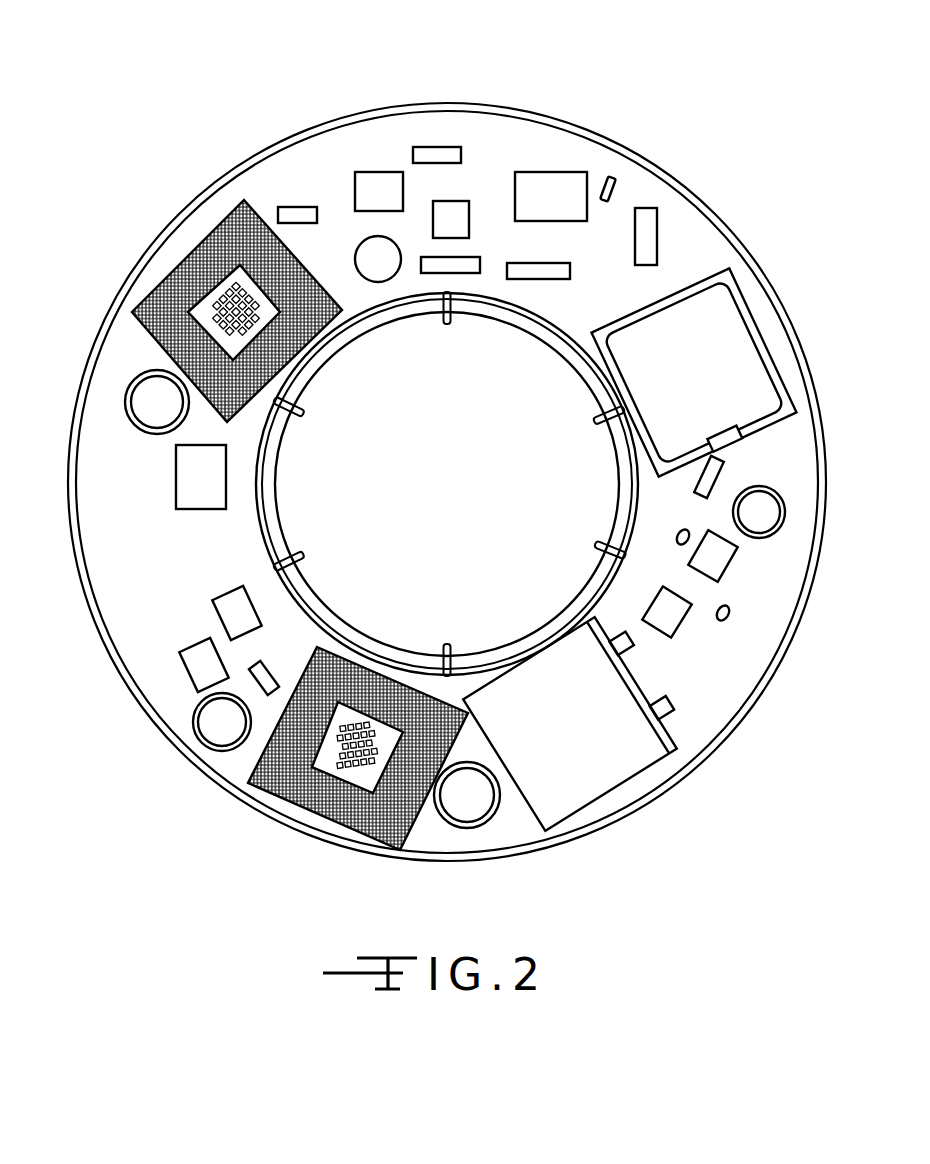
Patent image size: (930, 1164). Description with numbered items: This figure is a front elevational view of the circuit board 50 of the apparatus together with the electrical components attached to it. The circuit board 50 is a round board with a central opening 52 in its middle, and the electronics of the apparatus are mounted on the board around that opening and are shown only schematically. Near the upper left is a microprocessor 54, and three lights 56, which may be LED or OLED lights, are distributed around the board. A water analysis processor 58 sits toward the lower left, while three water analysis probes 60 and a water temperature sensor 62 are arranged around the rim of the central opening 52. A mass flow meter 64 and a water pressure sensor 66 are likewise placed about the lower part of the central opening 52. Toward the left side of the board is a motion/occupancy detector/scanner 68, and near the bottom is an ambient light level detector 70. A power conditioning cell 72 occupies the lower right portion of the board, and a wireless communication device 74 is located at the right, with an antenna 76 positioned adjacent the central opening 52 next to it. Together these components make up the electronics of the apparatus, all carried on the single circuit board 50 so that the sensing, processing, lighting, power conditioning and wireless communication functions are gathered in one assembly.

The circuit board 50 is at (229, 124).
The central opening 52 is at (278, 480).
The microprocessor 54 is at (185, 263).
The lights 56 is at (462, 201).
The water analysis processor 58 is at (302, 806).
The water analysis probes 60 is at (450, 322).
The water temperature sensor 62 is at (305, 413).
The mass flow meter 64 is at (333, 614).
The water pressure sensor 66 is at (450, 643).
The motion/occupancy detector/scanner 68 is at (130, 378).
The ambient light level detector 70 is at (497, 812).
The power conditioning cell 72 is at (570, 782).
The wireless communication device 74 is at (700, 312).
The antenna 76 is at (597, 417).